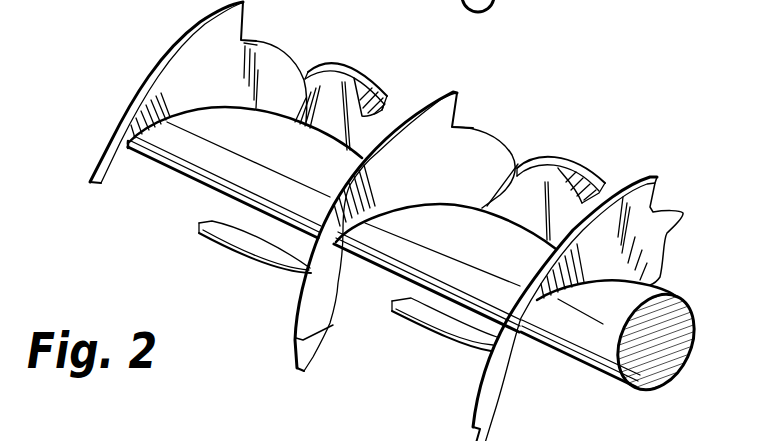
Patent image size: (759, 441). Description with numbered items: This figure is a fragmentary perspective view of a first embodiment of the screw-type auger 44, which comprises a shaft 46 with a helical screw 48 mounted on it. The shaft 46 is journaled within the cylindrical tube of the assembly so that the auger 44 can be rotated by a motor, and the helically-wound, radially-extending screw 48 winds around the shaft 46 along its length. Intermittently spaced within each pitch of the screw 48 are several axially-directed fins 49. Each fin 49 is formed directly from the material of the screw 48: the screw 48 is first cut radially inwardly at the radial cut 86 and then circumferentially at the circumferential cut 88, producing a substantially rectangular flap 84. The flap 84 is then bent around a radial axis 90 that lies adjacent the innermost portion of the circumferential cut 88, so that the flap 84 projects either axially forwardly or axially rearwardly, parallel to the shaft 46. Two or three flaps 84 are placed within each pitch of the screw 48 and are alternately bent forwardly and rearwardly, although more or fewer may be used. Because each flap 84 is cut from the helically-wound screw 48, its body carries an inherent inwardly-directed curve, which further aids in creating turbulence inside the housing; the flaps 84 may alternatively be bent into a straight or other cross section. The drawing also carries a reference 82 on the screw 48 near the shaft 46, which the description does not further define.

The screw-type auger 44 is at (557, 113).
The shaft 46 is at (200, 179).
The helical screw 48 is at (163, 58).
The axial fin 49 is at (379, 67).
The flight root edge 82 is at (140, 107).
The flap 84 is at (377, 88).
The radially inward cut 86 is at (246, 24).
The circumferential cut 88 is at (284, 50).
The radial axis 90 is at (321, 65).